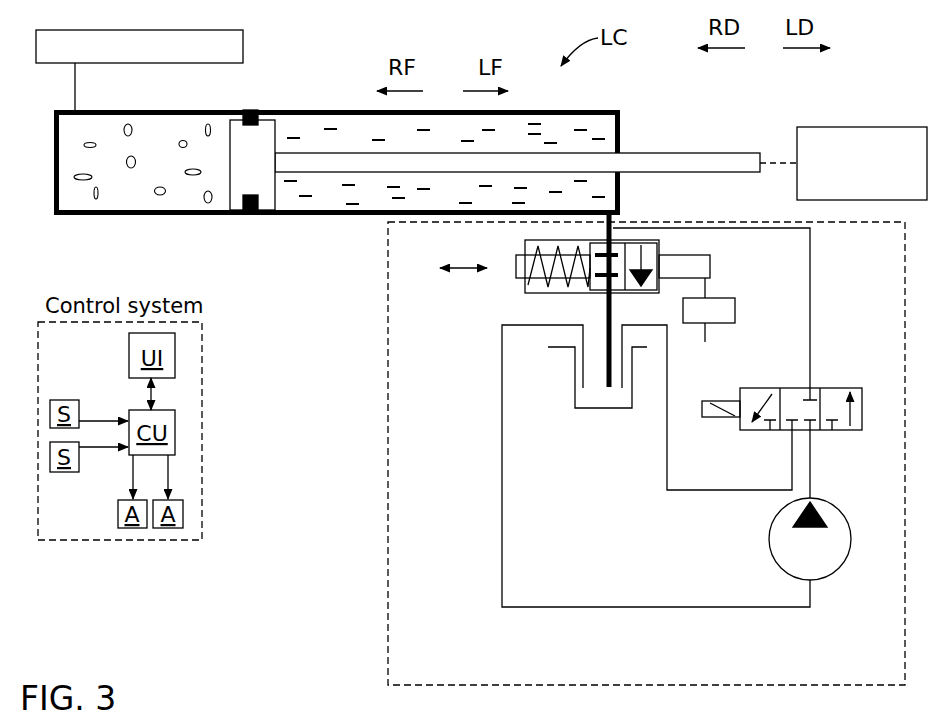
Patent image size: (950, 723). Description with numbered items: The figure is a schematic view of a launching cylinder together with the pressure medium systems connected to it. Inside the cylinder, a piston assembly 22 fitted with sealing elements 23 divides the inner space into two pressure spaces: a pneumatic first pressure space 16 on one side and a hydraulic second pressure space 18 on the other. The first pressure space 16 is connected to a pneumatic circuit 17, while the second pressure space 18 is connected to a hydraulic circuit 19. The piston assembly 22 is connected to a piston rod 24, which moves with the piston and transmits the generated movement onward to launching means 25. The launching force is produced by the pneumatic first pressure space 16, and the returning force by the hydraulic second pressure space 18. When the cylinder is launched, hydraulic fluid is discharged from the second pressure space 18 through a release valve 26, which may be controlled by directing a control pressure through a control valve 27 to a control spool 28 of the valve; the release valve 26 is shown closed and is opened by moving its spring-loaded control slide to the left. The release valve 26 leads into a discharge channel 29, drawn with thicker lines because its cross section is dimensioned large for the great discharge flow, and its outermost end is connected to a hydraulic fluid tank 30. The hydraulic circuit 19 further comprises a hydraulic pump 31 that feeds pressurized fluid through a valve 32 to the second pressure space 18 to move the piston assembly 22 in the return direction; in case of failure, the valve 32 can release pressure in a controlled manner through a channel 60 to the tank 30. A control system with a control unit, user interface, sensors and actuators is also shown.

The pneumatic first pressure space 16 is at (143, 190).
The pneumatic circuit 17 is at (96, 77).
The hydraulic second pressure space 18 is at (335, 197).
The hydraulic circuit 19 is at (366, 392).
The piston assembly 22 is at (263, 140).
The sealing elements 23 is at (250, 112).
The piston rod 24 is at (655, 163).
The launching means 25 is at (835, 127).
The release valve 26 is at (467, 309).
The control valve 27 is at (725, 310).
The control spool 28 is at (700, 265).
The discharge channel 29 is at (614, 219).
The hydraulic fluid tank 30 is at (572, 392).
The hydraulic pump 31 is at (780, 545).
The valve 32 is at (727, 428).
The channel 60 is at (667, 440).